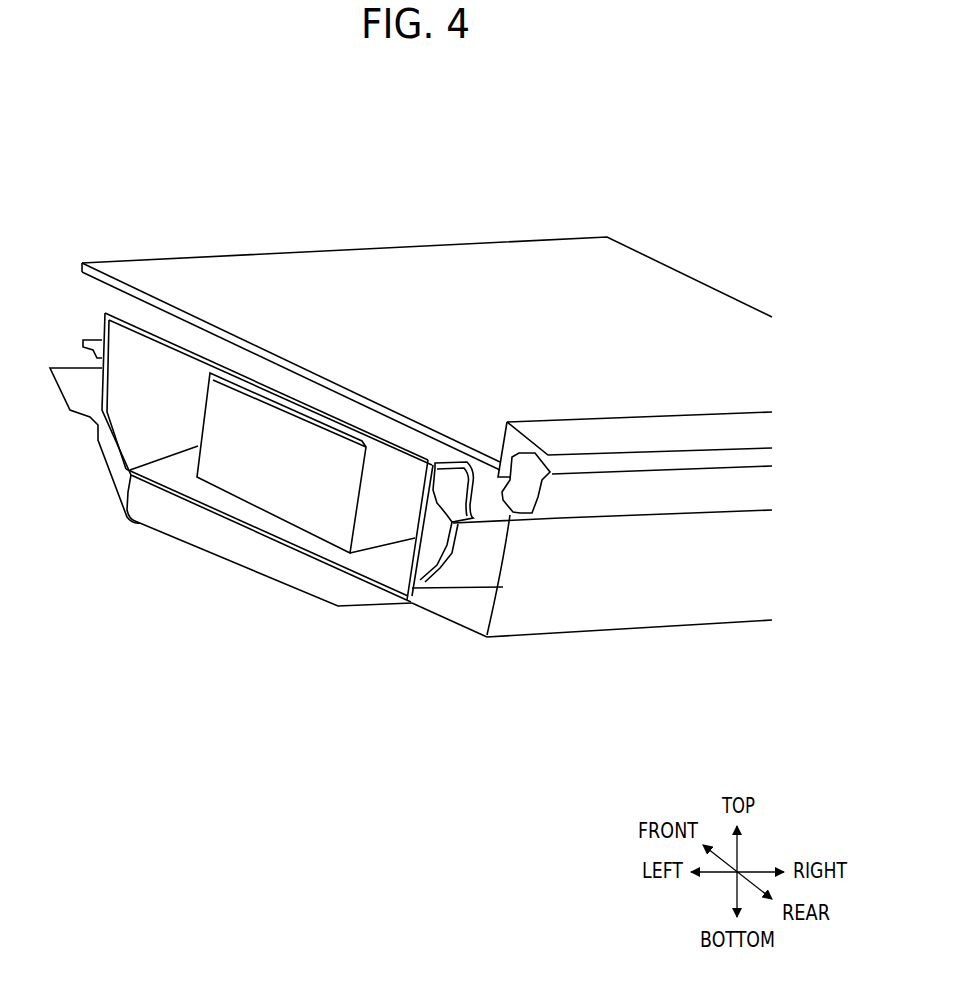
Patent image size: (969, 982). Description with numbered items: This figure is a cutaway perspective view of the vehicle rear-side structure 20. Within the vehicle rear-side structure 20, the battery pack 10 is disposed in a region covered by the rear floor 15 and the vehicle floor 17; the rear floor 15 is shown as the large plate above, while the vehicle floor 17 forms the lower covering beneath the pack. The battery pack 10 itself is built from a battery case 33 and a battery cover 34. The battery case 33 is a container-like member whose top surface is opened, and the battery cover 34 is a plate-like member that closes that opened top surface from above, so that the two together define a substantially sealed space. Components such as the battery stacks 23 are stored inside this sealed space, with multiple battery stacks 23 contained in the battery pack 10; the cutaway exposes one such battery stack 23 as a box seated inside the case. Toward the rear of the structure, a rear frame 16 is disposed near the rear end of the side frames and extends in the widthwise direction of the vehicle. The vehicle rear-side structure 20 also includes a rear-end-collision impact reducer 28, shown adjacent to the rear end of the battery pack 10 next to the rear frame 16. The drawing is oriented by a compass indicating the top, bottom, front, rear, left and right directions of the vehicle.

The battery pack 10 is at (360, 657).
The rear floor 15 is at (462, 243).
The rear frame 16 is at (540, 518).
The vehicle floor 17 is at (187, 543).
The vehicle rear-side structure 20 is at (638, 150).
The battery stack 23 is at (288, 520).
The rear-end-collision impact reducer 28 is at (445, 524).
The battery case 33 is at (151, 488).
The battery cover 34 is at (212, 362).